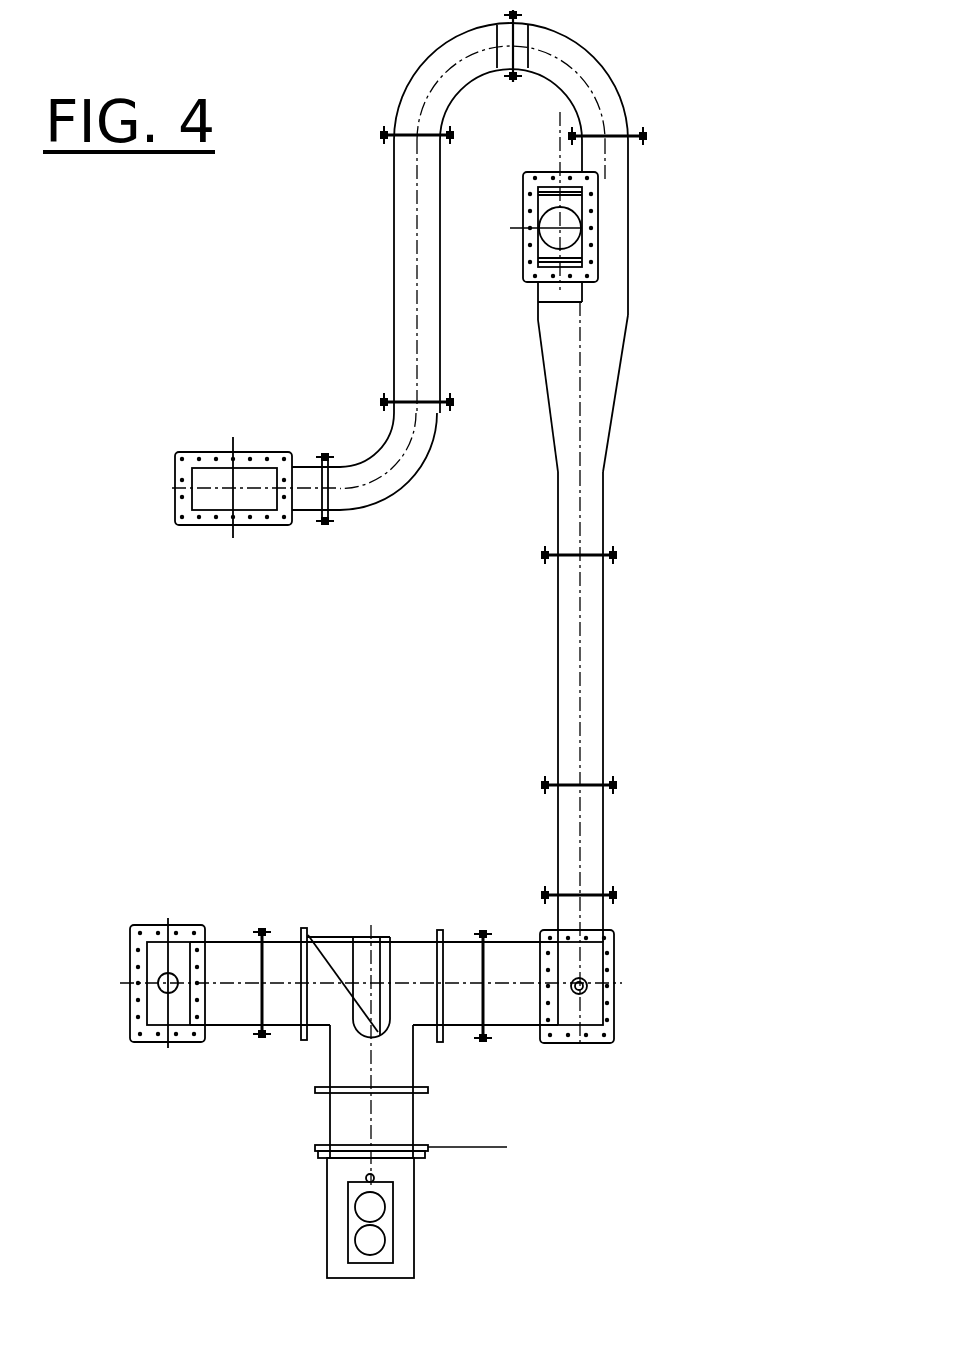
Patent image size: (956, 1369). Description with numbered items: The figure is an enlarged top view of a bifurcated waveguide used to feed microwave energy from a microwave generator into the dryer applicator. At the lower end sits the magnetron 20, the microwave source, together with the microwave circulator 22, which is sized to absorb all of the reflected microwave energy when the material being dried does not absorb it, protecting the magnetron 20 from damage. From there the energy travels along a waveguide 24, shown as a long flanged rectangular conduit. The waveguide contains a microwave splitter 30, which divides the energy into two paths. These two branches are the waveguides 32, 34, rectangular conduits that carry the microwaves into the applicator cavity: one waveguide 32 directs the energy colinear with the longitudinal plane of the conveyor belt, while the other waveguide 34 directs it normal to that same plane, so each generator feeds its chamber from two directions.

The magnetron 20 is at (415, 1227).
The microwave circulator 22 is at (367, 930).
The waveguide 24 is at (557, 740).
The microwave splitter 30 is at (600, 325).
The waveguide (colinear branch) 32 is at (210, 450).
The waveguide (normal branch) 34 is at (550, 170).